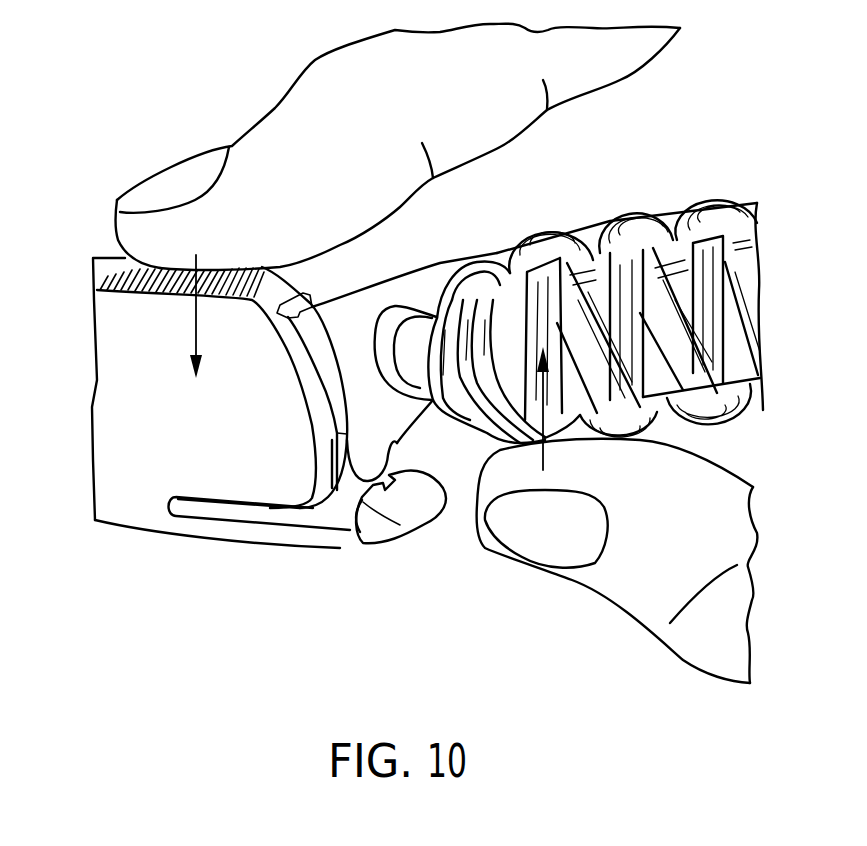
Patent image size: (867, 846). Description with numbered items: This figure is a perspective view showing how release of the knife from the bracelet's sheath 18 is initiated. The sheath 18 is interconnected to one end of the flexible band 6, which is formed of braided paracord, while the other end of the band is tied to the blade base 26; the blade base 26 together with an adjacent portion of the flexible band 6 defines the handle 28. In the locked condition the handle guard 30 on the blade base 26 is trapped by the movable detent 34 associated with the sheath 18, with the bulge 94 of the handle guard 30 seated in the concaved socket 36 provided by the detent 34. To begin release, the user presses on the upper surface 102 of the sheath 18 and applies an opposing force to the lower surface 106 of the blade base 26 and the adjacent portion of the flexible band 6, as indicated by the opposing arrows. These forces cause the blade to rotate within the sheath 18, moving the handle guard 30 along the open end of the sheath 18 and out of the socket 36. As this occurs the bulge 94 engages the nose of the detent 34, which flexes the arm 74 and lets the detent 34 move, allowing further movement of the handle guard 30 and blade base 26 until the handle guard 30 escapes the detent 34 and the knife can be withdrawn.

The flexible band 6 is at (690, 218).
The sheath 18 is at (230, 435).
The blade base 26 is at (440, 277).
The handle 28 is at (398, 233).
The handle guard 30 is at (358, 463).
The detent 34 is at (392, 522).
The socket 36 is at (362, 502).
The arm 74 is at (222, 532).
The bulge 94 is at (378, 447).
The upper surface 102 is at (130, 277).
The lower surface 106 is at (492, 440).